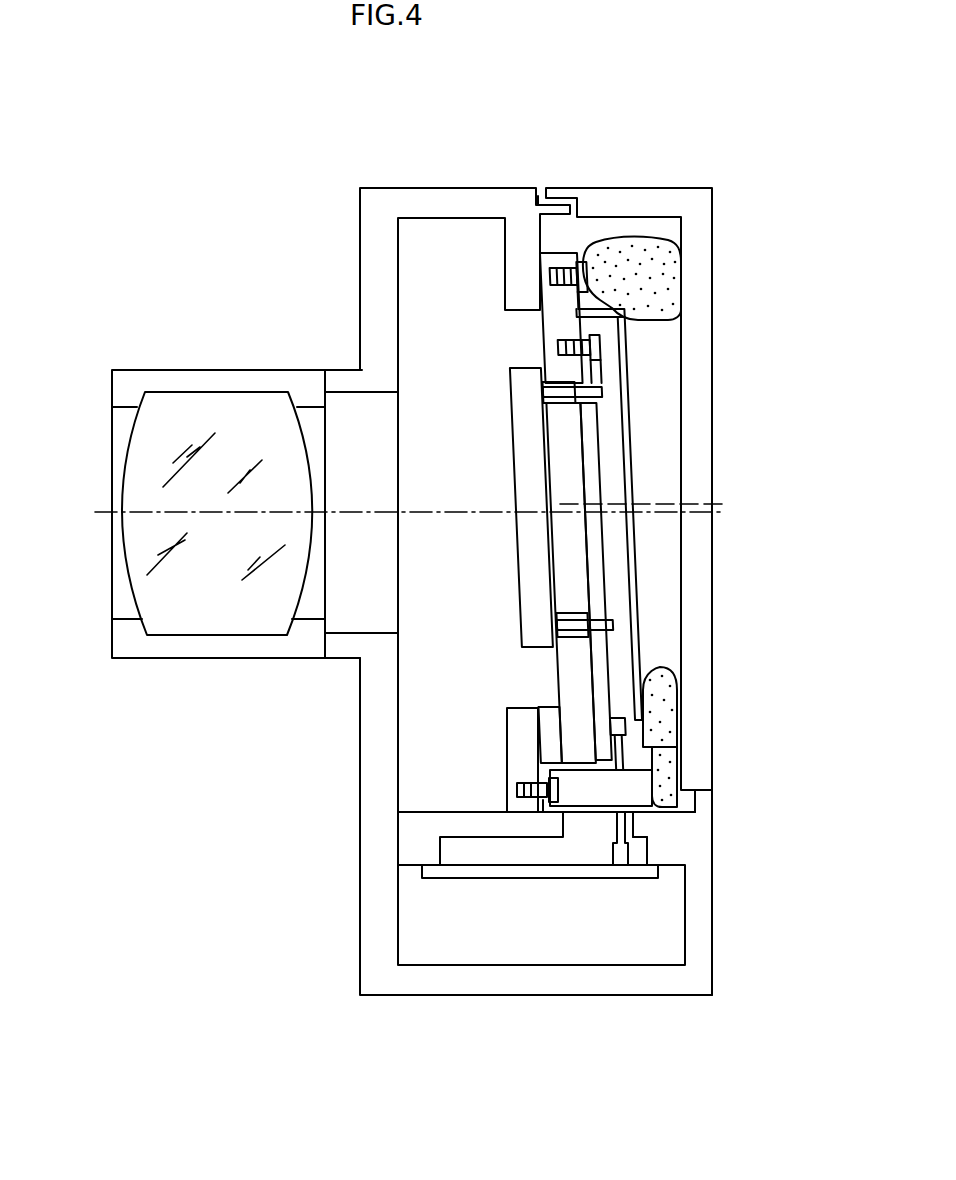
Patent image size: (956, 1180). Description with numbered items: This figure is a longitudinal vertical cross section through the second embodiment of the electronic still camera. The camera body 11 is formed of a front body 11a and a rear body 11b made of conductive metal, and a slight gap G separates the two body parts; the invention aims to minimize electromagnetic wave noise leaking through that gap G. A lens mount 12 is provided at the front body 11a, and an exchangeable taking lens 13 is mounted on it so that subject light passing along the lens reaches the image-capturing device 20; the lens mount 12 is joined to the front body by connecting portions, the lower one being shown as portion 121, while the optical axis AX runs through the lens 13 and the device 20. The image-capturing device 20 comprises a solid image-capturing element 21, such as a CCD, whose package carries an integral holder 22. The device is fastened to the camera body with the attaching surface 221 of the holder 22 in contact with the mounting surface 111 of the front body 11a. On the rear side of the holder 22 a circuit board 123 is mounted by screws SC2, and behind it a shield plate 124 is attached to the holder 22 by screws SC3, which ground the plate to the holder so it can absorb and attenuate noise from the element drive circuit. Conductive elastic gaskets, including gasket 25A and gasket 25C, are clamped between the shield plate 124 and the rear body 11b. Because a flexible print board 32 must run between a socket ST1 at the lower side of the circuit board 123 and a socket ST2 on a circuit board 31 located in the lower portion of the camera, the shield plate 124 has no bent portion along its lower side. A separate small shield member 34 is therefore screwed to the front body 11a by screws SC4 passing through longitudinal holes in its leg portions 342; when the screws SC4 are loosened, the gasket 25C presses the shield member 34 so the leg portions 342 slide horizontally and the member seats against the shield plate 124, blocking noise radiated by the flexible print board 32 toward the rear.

The camera body 11 is at (652, 80).
The front body 11a is at (511, 187).
The rear body 11b is at (627, 186).
The gap G is at (540, 188).
The mounting surface 111 is at (542, 730).
The lens mount 12 is at (340, 370).
The connecting portion 121 is at (324, 636).
The taking lens 13 is at (207, 371).
The optical axis AX is at (106, 510).
The image-capturing device 20 is at (607, 509).
The image-capturing element 21 is at (522, 400).
The holder 22 is at (552, 328).
The attaching surface 221 is at (540, 273).
The circuit board 123 is at (588, 457).
The shield plate 124 is at (628, 398).
The screws SC2 is at (600, 338).
The screws SC3 is at (592, 282).
The screws SC4 is at (580, 800).
The gasket 25A is at (657, 252).
The gasket 25C is at (648, 712).
The shield member 34 is at (663, 748).
The socket ST1 is at (622, 733).
The socket ST2 is at (625, 853).
The circuit board 31 is at (458, 878).
The flexible print board 32 is at (625, 823).
The leg portions 342 is at (593, 800).